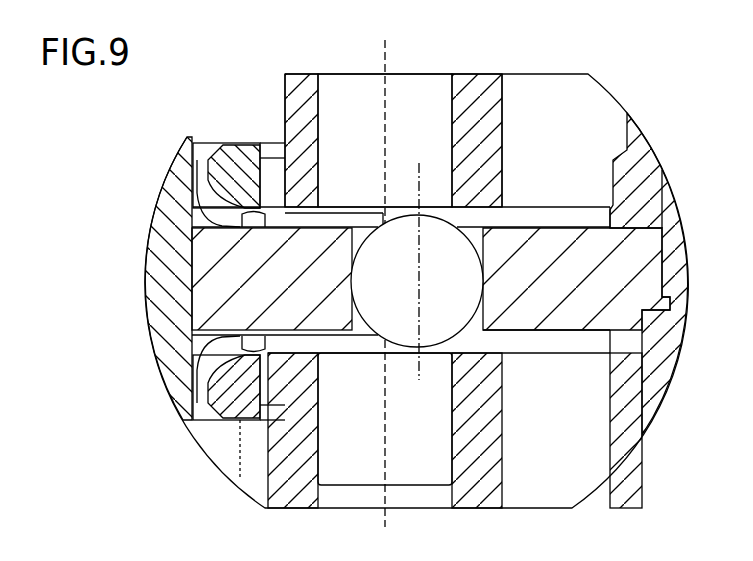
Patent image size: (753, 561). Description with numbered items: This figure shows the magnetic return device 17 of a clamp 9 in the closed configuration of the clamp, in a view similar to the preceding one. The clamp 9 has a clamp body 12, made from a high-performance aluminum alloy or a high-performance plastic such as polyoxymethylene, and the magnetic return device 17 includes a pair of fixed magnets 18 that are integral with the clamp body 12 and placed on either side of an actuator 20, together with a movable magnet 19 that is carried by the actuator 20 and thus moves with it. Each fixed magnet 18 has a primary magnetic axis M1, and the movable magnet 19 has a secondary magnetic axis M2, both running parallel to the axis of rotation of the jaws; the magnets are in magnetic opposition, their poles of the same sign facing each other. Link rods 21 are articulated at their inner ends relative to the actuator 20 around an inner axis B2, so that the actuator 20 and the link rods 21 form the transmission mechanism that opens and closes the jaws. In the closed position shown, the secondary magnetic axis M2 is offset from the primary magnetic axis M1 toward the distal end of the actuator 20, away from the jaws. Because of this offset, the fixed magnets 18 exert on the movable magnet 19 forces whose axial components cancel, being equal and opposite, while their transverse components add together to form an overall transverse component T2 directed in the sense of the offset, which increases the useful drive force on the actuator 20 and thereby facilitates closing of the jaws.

The clamp 9 is at (484, 68).
The clamp body 12 is at (492, 110).
The magnetic return device 17 is at (420, 494).
The fixed magnet 18 is at (427, 143).
The movable magnet 19 is at (363, 287).
The actuator 20 is at (247, 293).
The link rod 21 is at (237, 152).
The inner axis B2 is at (152, 280).
The primary magnetic axis M1 is at (383, 160).
The secondary magnetic axis M2 is at (422, 260).
The overall transverse component T2 is at (418, 281).